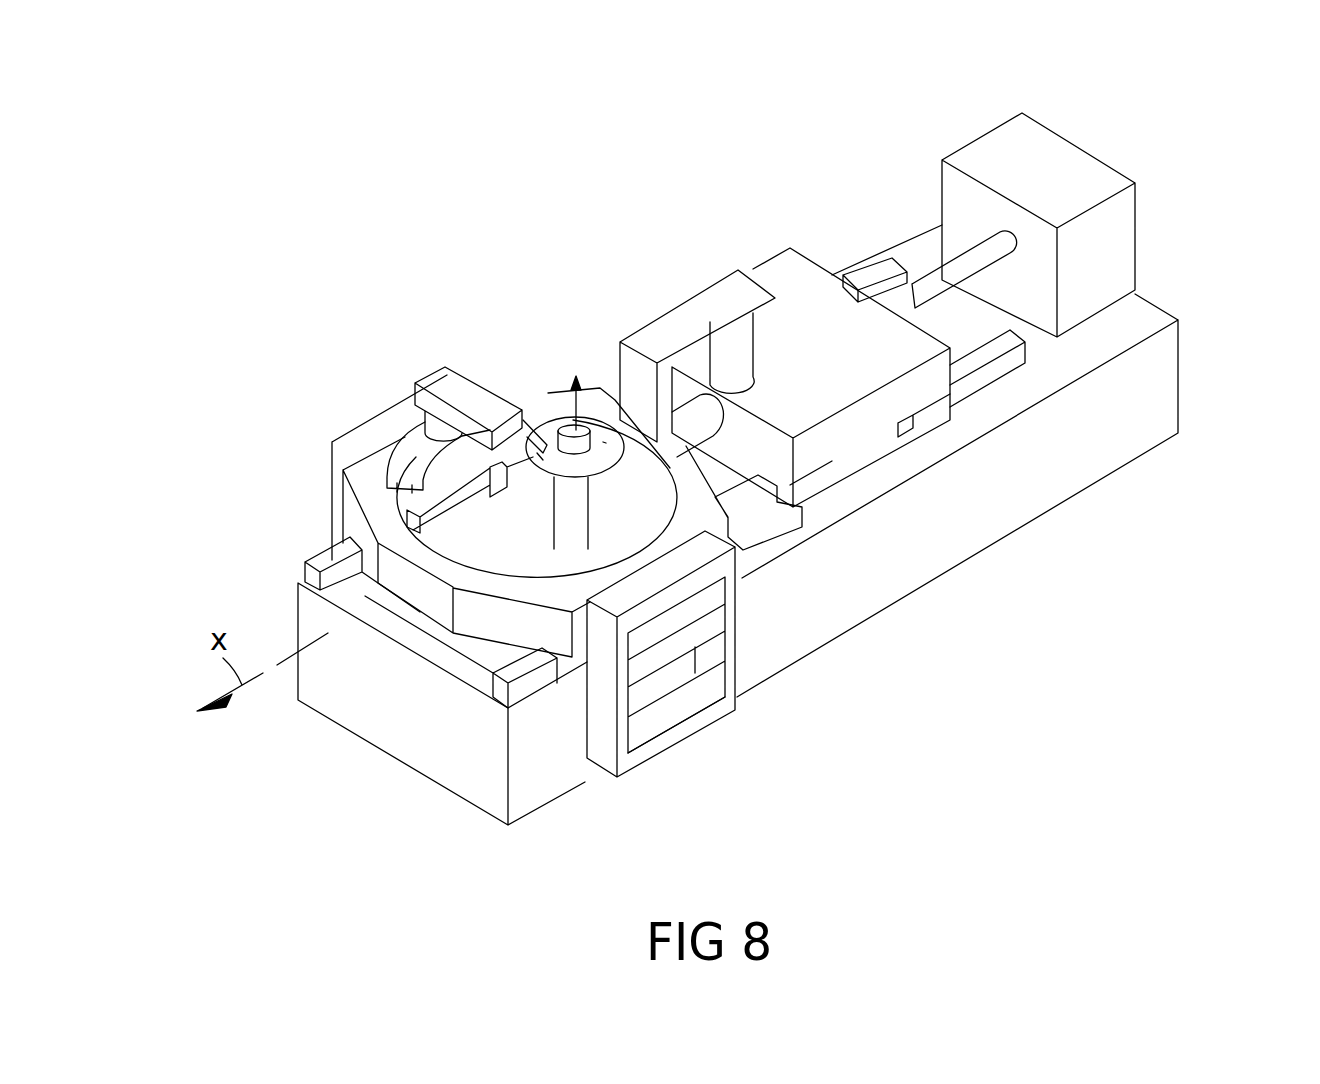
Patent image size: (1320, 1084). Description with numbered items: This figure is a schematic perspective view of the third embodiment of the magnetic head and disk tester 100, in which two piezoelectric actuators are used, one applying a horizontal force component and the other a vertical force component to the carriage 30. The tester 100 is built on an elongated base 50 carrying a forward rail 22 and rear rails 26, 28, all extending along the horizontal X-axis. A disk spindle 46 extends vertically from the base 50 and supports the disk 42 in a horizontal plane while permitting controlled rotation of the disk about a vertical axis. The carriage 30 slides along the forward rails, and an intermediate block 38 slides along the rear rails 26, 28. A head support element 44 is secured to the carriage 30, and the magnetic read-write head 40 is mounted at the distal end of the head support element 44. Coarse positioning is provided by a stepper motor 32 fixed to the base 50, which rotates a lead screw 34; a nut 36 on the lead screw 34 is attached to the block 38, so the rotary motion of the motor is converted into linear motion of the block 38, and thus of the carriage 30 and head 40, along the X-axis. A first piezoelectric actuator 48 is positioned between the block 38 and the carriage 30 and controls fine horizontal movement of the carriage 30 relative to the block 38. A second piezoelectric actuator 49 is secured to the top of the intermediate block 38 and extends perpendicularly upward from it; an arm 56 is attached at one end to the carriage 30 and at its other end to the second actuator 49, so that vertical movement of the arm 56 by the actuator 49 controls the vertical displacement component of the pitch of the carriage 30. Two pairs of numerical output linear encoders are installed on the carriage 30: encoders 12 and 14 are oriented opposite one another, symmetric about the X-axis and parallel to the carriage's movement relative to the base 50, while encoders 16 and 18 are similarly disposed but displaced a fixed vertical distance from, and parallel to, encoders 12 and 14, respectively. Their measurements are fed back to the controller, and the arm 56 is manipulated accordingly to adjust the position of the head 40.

The magnetic head and disk tester 100 is at (1290, 161).
The numerical output linear encoder 12 is at (332, 443).
The numerical output linear encoder 14 is at (662, 652).
The numerical output linear encoder 16 is at (327, 527).
The numerical output linear encoder 18 is at (695, 725).
The forward rail 22 is at (303, 562).
The rear rail 26 is at (883, 272).
The rear rail 28 is at (988, 376).
The carriage 30 is at (577, 372).
The stepper motor 32 is at (1062, 172).
The lead screw 34 is at (928, 282).
The nut 36 is at (892, 303).
The intermediate block 38 is at (798, 270).
The magnetic read-write head 40 is at (550, 413).
The disk 42 is at (604, 441).
The head support element 44 is at (460, 388).
The disk spindle 46 is at (577, 493).
The piezoelectric actuator 48 is at (692, 413).
The second piezoelectric actuator 49 is at (743, 343).
The base 50 is at (1120, 455).
The arm 56 is at (712, 270).